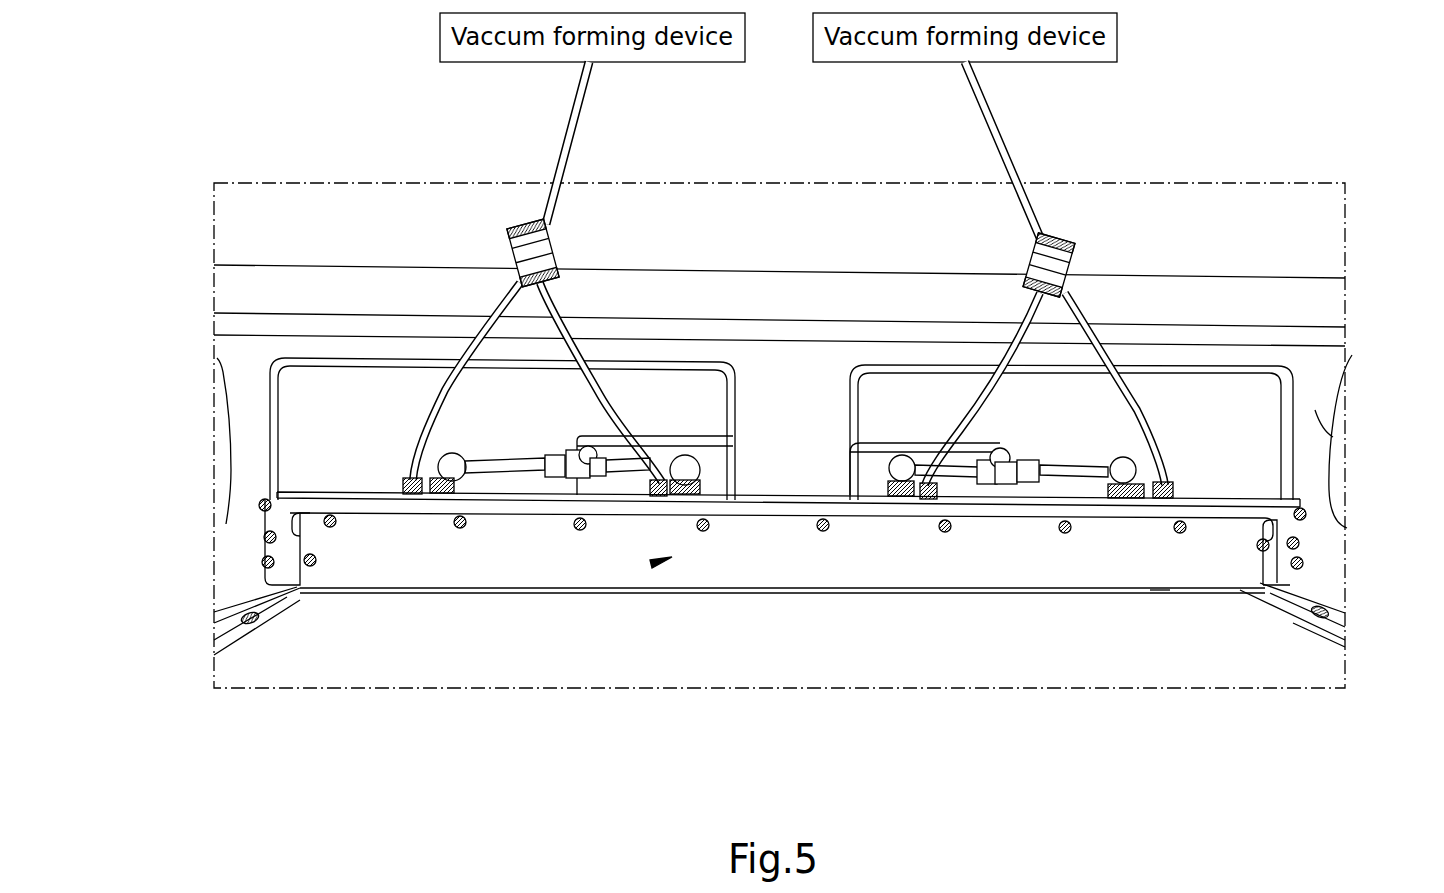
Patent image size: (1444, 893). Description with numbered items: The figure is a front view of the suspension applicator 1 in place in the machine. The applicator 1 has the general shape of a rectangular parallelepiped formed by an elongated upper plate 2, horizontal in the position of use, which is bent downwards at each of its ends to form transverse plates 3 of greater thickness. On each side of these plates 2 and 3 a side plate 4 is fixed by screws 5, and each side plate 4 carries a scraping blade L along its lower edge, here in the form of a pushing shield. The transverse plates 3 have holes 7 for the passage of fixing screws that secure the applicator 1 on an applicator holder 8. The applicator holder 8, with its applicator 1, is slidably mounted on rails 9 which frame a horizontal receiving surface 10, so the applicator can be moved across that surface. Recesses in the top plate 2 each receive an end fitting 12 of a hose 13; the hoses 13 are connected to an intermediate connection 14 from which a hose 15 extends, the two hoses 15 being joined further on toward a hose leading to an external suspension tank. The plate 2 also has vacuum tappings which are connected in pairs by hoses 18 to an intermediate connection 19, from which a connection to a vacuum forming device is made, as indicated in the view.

The suspension applicator 1 is at (652, 562).
The upper plate 2 is at (763, 515).
The transverse plate 3 is at (265, 537).
The side plate 4 is at (863, 562).
The screw 5 is at (583, 531).
The hole 7 is at (266, 558).
The applicator holder 8 is at (1333, 438).
The rail 9 is at (267, 627).
The horizontal receiving surface 10 is at (733, 660).
The end fitting 12 is at (436, 452).
The hose 13 is at (630, 458).
The intermediate connection 14 is at (585, 448).
The hose 15 is at (690, 452).
The hose 18 is at (418, 478).
The intermediate connection 19 is at (513, 250).
The scraping blade L is at (1160, 592).